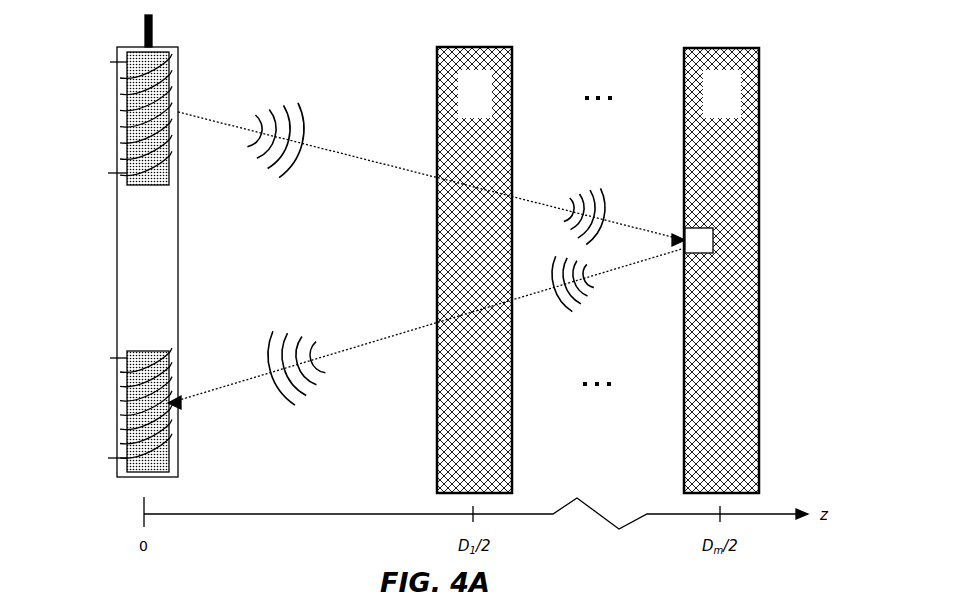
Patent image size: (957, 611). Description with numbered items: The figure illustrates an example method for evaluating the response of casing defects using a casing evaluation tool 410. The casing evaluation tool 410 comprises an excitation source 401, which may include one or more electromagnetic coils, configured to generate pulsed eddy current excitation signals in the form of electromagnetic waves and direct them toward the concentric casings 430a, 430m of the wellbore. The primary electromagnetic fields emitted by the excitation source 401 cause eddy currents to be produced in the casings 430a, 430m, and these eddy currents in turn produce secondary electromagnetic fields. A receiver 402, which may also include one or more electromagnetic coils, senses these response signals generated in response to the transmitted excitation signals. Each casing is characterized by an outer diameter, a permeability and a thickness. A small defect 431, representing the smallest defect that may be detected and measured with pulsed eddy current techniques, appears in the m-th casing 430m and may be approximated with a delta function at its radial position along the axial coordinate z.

The casing evaluation tool 410 is at (120, 47).
The excitation source 401 is at (127, 128).
The receiver 402 is at (127, 380).
The casing 430a is at (512, 459).
The m-th casing 430m is at (759, 458).
The defect 431 is at (713, 237).